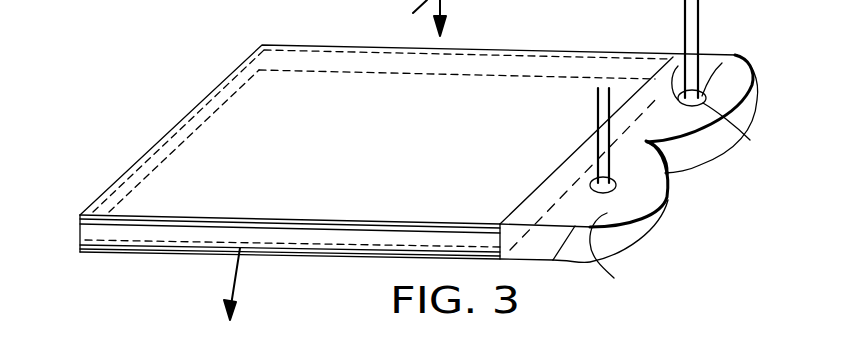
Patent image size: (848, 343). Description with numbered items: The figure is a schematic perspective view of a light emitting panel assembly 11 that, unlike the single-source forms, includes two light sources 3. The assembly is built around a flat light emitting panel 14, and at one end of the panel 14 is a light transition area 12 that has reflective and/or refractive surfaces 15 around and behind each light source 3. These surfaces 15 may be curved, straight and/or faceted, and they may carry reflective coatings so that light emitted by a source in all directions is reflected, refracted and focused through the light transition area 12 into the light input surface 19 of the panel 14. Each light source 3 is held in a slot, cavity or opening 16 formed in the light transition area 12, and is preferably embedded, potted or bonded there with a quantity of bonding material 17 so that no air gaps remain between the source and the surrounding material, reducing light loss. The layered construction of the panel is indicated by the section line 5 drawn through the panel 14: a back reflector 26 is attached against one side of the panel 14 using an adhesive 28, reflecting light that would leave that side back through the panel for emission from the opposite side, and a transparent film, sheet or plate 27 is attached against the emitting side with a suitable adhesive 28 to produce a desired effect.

The light source 3 is at (724, 63).
The section line 5- 5 is at (349, 165).
The light emitting panel assembly 11 is at (542, 34).
The light transition area 12 is at (722, 62).
The light emitting panel 14 is at (86, 233).
The reflective and/or refractive surfaces 15 is at (755, 114).
The slots, cavities or openings 16 is at (752, 128).
The embedding, potting or bonding material 17 is at (677, 62).
The light input surface 19 is at (530, 210).
The back reflector 26 is at (300, 259).
The transparent film, sheet or plate 27 is at (240, 120).
The adhesive 28 is at (330, 70).